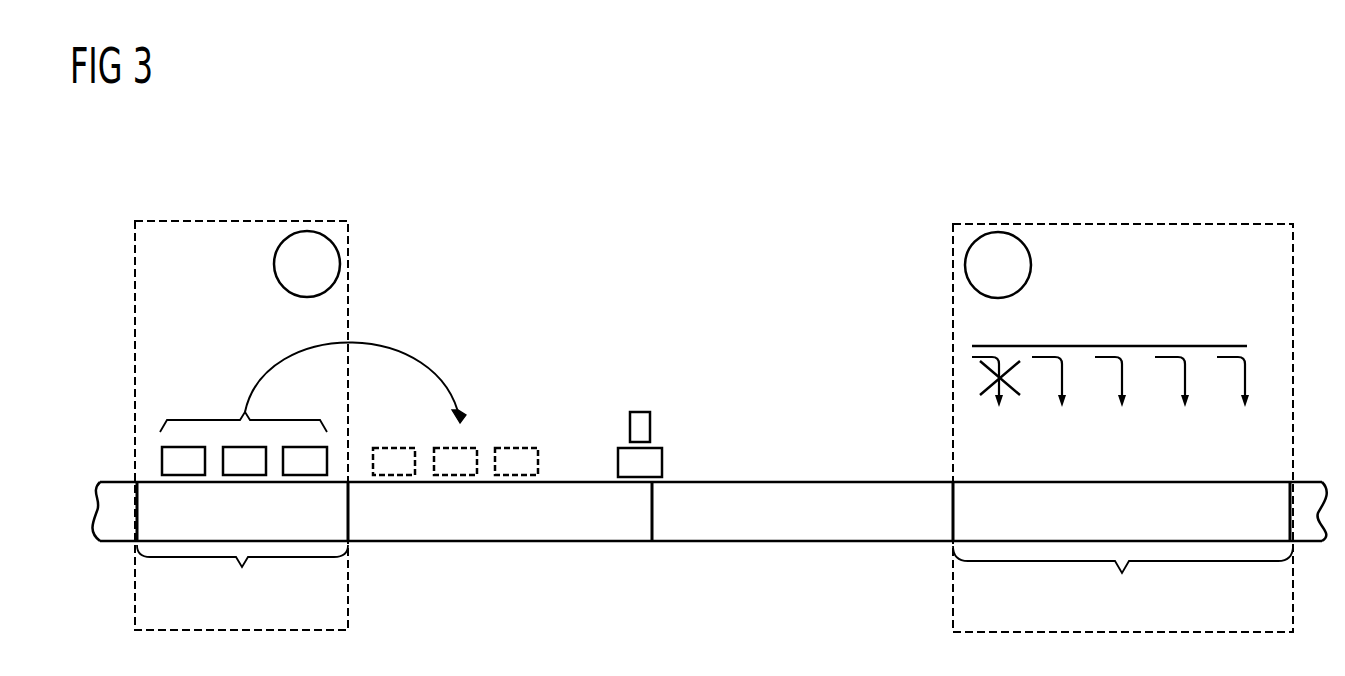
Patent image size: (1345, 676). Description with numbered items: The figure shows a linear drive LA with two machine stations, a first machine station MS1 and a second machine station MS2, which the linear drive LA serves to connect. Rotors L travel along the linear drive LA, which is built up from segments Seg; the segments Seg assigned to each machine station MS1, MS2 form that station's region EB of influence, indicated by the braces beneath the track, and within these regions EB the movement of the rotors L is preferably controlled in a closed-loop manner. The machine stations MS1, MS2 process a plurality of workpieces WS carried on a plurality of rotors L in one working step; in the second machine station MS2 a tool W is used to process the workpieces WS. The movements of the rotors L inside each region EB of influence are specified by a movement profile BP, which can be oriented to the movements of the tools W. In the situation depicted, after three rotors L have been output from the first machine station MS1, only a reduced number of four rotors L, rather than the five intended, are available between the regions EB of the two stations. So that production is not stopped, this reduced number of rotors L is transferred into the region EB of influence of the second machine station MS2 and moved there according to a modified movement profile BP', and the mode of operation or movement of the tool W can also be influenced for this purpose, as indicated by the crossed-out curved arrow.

The first machine station MS1 is at (240, 221).
The second machine station MS2 is at (1128, 224).
The movement profile BP is at (307, 264).
The modified movement profile BP' is at (998, 265).
The linear drive LA is at (683, 250).
The workpiece WS is at (638, 412).
The rotor L is at (650, 458).
The tool W is at (1198, 343).
The region of influence EB is at (715, 578).
The segment Seg is at (262, 526).